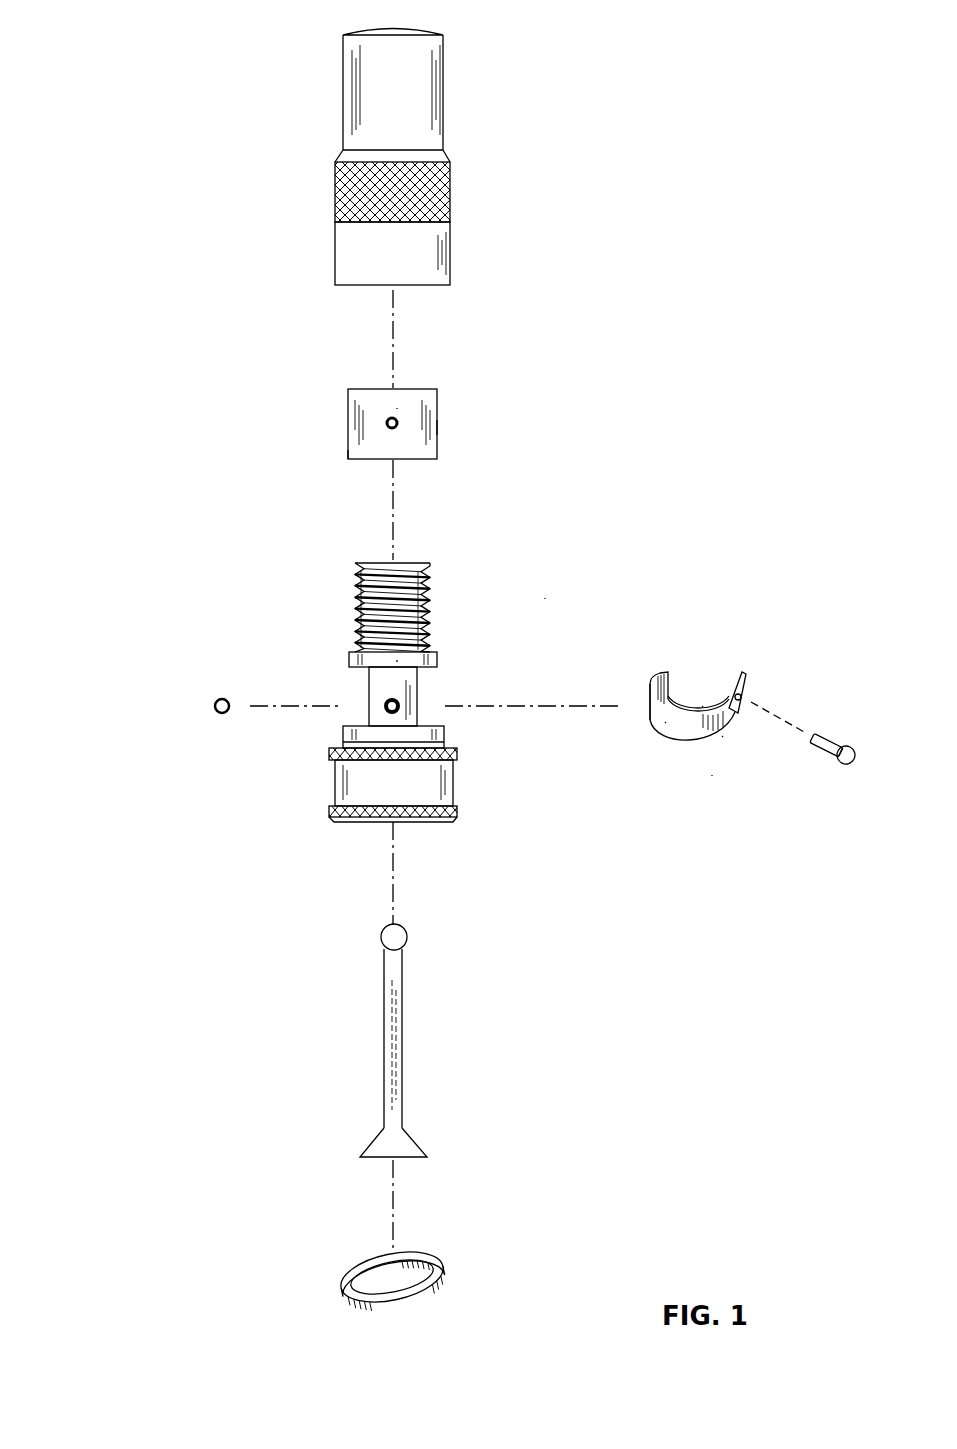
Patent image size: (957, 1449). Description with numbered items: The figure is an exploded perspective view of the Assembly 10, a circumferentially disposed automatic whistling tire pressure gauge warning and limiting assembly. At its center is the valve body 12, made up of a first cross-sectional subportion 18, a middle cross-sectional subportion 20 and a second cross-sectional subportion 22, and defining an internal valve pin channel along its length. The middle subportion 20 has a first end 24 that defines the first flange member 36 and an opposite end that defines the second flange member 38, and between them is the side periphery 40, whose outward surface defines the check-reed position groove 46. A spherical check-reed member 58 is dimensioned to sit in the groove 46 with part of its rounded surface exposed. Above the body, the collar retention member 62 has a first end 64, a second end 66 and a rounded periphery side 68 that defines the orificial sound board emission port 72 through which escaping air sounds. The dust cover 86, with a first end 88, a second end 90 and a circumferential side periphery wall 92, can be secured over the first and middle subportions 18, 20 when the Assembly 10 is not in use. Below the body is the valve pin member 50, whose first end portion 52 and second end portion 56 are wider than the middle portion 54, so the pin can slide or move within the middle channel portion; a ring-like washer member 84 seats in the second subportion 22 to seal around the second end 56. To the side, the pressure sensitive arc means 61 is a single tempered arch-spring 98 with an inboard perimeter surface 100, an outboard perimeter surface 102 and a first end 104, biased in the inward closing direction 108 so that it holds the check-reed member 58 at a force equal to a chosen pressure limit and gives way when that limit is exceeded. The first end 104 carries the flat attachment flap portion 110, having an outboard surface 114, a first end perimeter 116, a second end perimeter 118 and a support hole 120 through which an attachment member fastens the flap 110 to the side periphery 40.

The Assembly 10 is at (545, 598).
The valve body 12 is at (320, 699).
The first cross-sectional subportion 18 is at (355, 590).
The middle cross-sectional subportion 20 is at (418, 687).
The second cross-sectional subportion 22 is at (342, 794).
The first end 24 is at (397, 660).
The first flange member 36 is at (350, 663).
The second flange member 38 is at (445, 733).
The side periphery 40 is at (400, 708).
The check-reed position groove 46 is at (385, 709).
The valve pin member 50 is at (408, 1023).
The first end portion 52 is at (398, 933).
The middle portion 54 is at (388, 1082).
The second end portion 56 is at (395, 1147).
The spherical check-reed member 58 is at (218, 713).
The pressure sensitive arc means 61 is at (711, 800).
The collar retention member 62 is at (397, 408).
The first end 64 is at (396, 420).
The second end 66 is at (365, 459).
The rounded periphery side 68 is at (421, 428).
The orificial sound board emission port 72 is at (387, 423).
The washer member 84 is at (462, 1240).
The dust cover 86 is at (462, 188).
The first end 88 is at (405, 40).
The second end 90 is at (430, 285).
The circumferential side periphery wall 92 is at (342, 130).
The tempered arch-spring 98 is at (702, 707).
The inboard perimeter surface 100 is at (658, 673).
The outboard perimeter surface 102 is at (665, 722).
The first end 104 is at (722, 737).
The inward or closing biasing force direction 108 is at (650, 684).
The attachment flap portion 110 is at (716, 714).
The outboard surface 114 is at (746, 680).
The first end perimeter 116 is at (747, 691).
The second end perimeter 118 is at (736, 712).
The support hole 120 is at (748, 700).